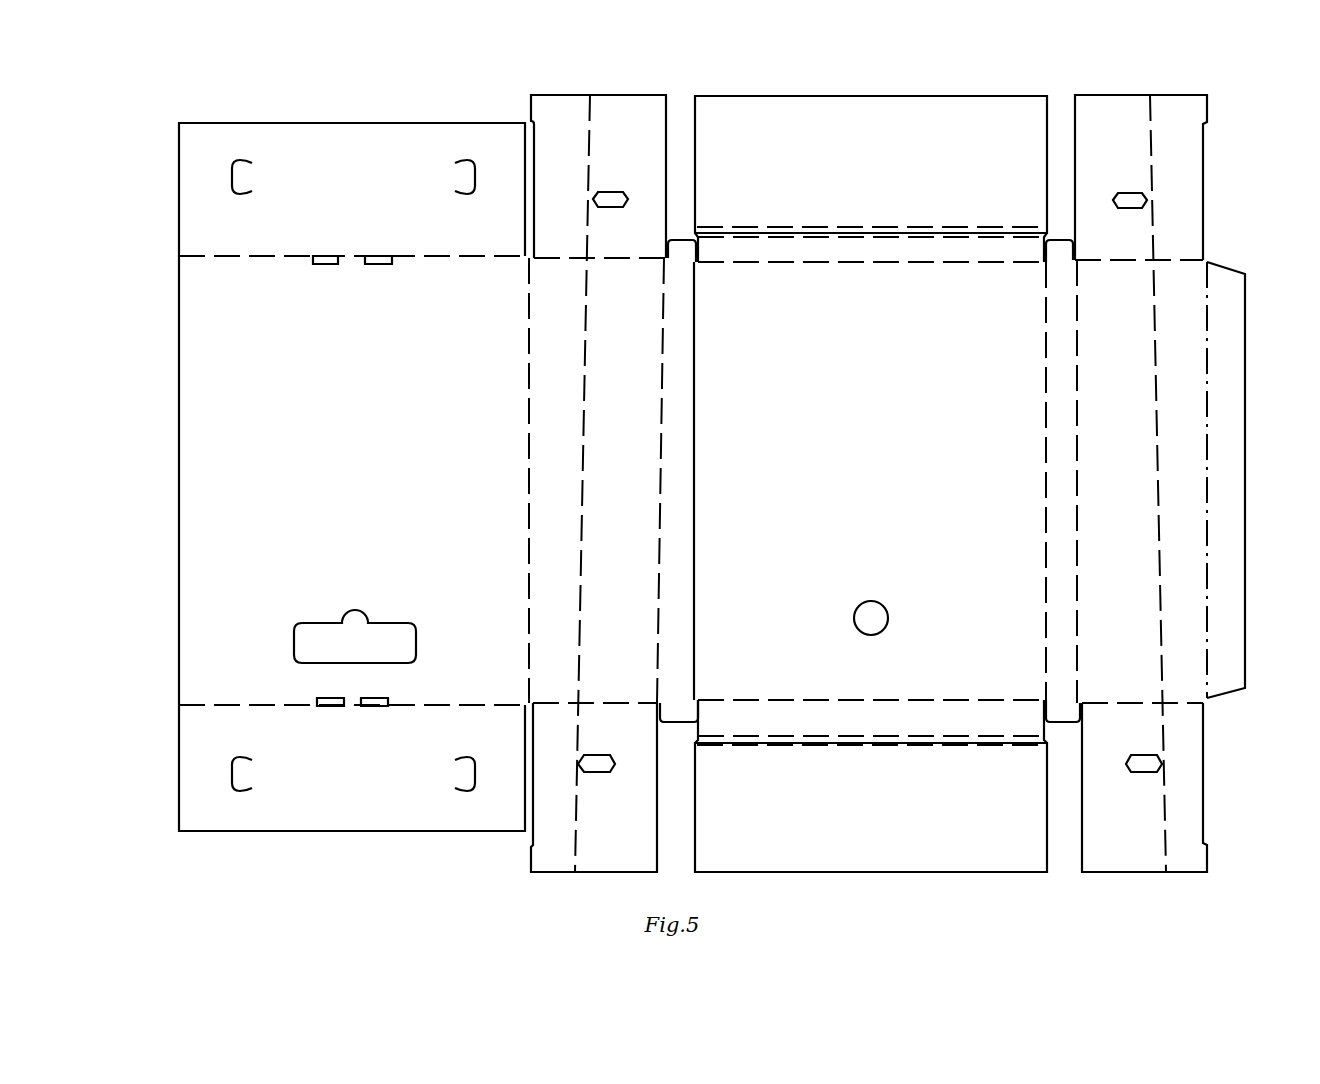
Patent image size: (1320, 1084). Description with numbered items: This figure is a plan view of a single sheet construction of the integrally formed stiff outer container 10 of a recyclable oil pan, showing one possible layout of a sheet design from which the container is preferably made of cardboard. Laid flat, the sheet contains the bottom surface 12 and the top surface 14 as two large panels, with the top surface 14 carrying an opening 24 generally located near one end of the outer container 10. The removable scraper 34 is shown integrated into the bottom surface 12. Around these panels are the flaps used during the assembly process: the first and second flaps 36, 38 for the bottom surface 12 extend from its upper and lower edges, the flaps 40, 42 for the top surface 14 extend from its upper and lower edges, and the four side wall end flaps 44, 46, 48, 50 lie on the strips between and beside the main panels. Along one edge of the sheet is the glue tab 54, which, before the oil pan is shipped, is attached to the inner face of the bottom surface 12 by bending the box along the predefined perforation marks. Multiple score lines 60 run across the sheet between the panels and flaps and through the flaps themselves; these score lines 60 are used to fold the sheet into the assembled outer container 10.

The stiff outer container 10 is at (712, 484).
The bottom surface 12 is at (352, 428).
The top surface 14 is at (833, 428).
The opening 24 is at (858, 610).
The removable scraper 34 is at (318, 630).
The first flap for the bottom surface 36 is at (200, 180).
The second flap for the bottom surface 38 is at (197, 767).
The first flap for the top surface 40 is at (990, 108).
The second flap for the top surface 42 is at (1005, 848).
The side wall end flap 44 is at (1177, 175).
The side wall end flap 46 is at (1192, 727).
The side wall end flap 48 is at (553, 110).
The side wall end flap 50 is at (548, 850).
The glue tab 54 is at (1237, 410).
The score lines 60 is at (592, 155).